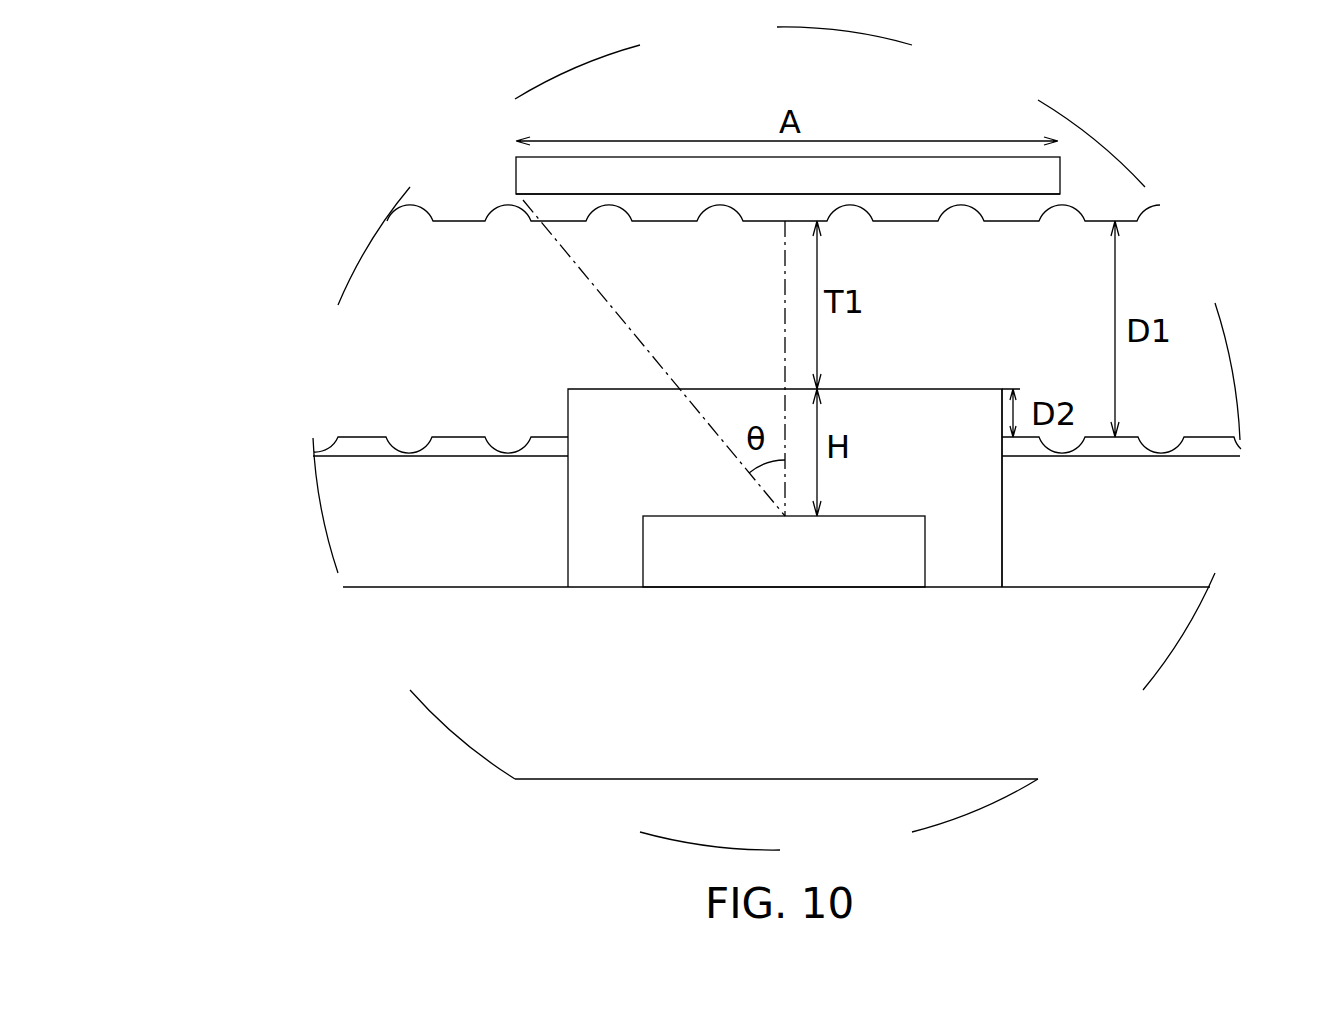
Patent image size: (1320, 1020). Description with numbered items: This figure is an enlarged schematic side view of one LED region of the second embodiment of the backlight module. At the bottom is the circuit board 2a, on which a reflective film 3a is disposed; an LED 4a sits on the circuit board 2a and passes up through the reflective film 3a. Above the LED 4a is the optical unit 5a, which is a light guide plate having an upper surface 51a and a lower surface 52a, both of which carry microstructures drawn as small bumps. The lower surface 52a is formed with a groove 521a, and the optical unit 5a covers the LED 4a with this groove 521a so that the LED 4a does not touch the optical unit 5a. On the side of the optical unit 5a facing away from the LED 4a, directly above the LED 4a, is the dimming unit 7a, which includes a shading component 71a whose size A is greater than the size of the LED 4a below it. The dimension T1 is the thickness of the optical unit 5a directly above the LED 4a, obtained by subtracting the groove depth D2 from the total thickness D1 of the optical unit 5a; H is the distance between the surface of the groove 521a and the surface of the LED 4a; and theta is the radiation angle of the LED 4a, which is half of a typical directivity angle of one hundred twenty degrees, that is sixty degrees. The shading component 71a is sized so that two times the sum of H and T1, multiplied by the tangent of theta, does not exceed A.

The optical unit 5a is at (367, 307).
The upper surface 51a is at (462, 220).
The lower surface 52a is at (363, 437).
The groove 521a is at (1002, 415).
The dimming unit 7a is at (1062, 167).
The shading component 71a is at (1047, 185).
The reflective film 3a is at (355, 540).
The LED 4a is at (683, 565).
The circuit board 2a is at (460, 708).